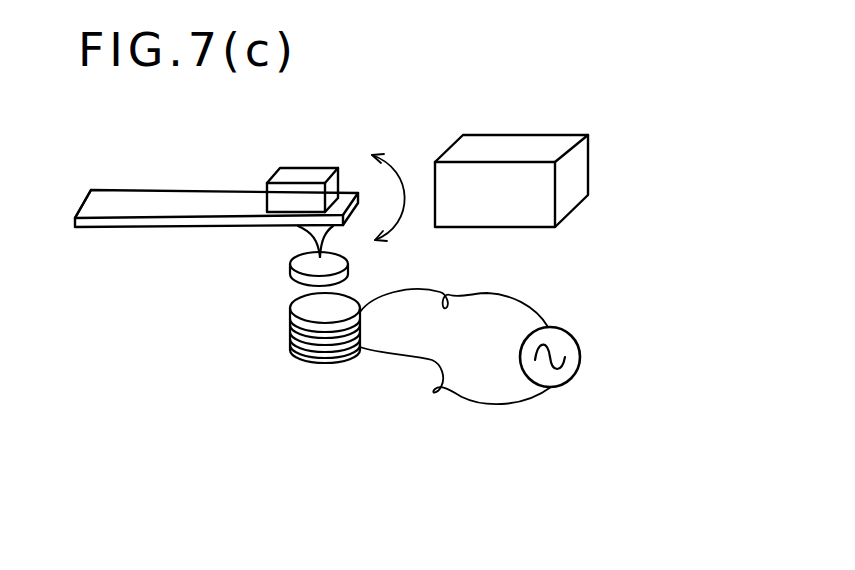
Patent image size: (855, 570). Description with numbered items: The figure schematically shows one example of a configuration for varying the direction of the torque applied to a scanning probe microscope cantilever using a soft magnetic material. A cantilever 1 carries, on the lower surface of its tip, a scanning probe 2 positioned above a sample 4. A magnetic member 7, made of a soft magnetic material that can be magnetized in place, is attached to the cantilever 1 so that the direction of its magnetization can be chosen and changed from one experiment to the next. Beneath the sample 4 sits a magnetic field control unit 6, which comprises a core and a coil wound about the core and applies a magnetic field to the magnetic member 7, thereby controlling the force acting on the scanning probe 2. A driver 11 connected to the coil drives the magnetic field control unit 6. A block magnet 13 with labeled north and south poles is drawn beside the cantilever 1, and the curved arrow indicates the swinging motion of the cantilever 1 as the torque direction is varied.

The cantilever 1 is at (167, 206).
The scanning probe 2 is at (309, 231).
The sample 4 is at (338, 270).
The magnetic field control unit 6 is at (290, 325).
The magnetic member 7 is at (300, 170).
The driver 11 is at (575, 340).
The permanent magnet 13 is at (537, 146).